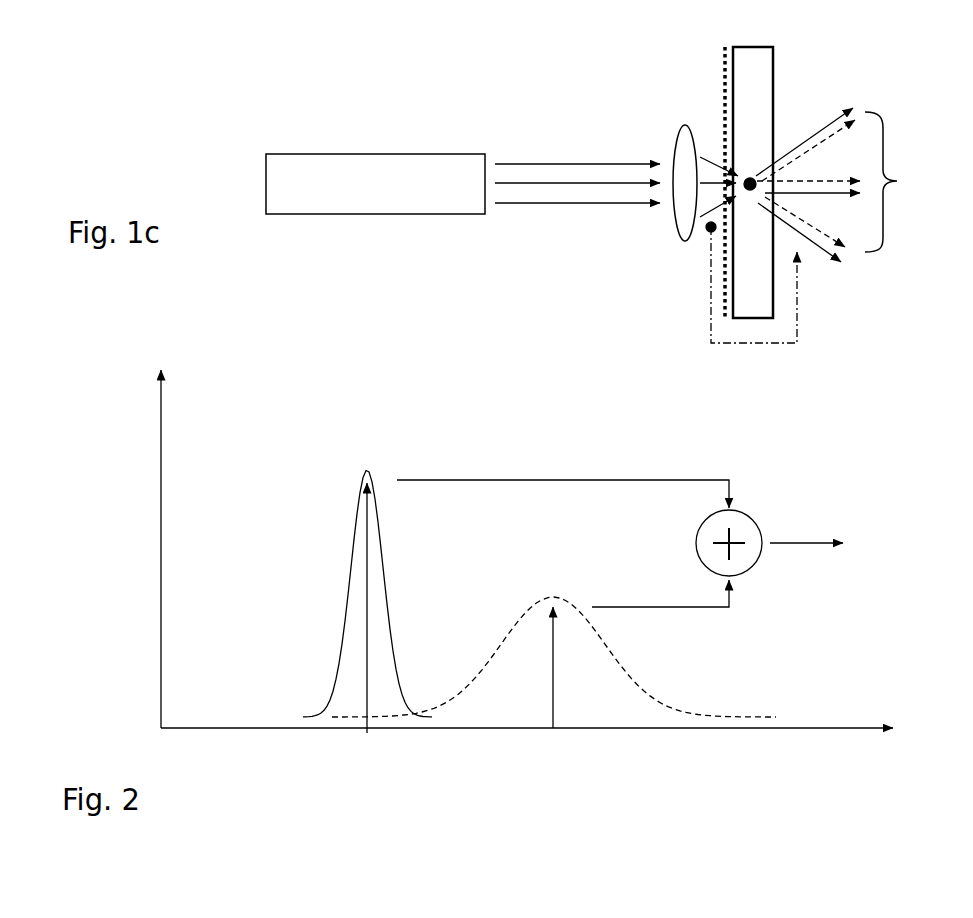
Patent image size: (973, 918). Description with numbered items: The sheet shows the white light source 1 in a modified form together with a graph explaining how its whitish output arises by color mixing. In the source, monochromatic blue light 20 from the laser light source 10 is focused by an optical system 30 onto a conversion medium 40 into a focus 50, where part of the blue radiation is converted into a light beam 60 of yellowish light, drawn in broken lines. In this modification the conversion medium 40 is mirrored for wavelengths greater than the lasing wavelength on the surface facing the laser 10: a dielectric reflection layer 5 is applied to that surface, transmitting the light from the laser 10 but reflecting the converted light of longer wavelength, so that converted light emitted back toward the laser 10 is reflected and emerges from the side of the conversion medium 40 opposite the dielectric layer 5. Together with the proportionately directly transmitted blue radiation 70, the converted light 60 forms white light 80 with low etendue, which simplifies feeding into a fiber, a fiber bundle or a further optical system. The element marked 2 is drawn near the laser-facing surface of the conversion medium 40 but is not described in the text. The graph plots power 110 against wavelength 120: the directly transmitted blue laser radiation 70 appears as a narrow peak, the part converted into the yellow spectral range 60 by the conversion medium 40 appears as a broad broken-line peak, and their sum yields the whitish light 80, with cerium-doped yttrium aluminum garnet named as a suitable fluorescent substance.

In FIG. 1C, the white light source 1 is at (373, 250).
In FIG. 1C, the sample surface 2 is at (712, 295).
In FIG. 1C, the dielectric reflection layer 5 is at (727, 322).
In FIG. 1C, the laser light source 10 is at (367, 152).
In FIG. 1C, the monochromatic blue light 20 is at (565, 158).
In FIG. 1C, the optical system 30 is at (675, 228).
In FIG. 1C, the conversion medium 40 is at (762, 285).
In FIG. 1C, the focus 50 is at (751, 171).
In FIG. 1C, the light beam of yellowish light 60 is at (828, 130).
In FIG. 2, the light beam of yellowish light 60 is at (560, 587).
In FIG. 1C, the directly transmitted blue radiation 70 is at (839, 258).
In FIG. 2, the directly transmitted blue radiation 70 is at (373, 458).
In FIG. 1C, the white light 80 is at (909, 182).
In FIG. 2, the white light 80 is at (803, 527).
In FIG. 2, the power 110 is at (135, 415).
In FIG. 2, the wavelength 120 is at (835, 743).